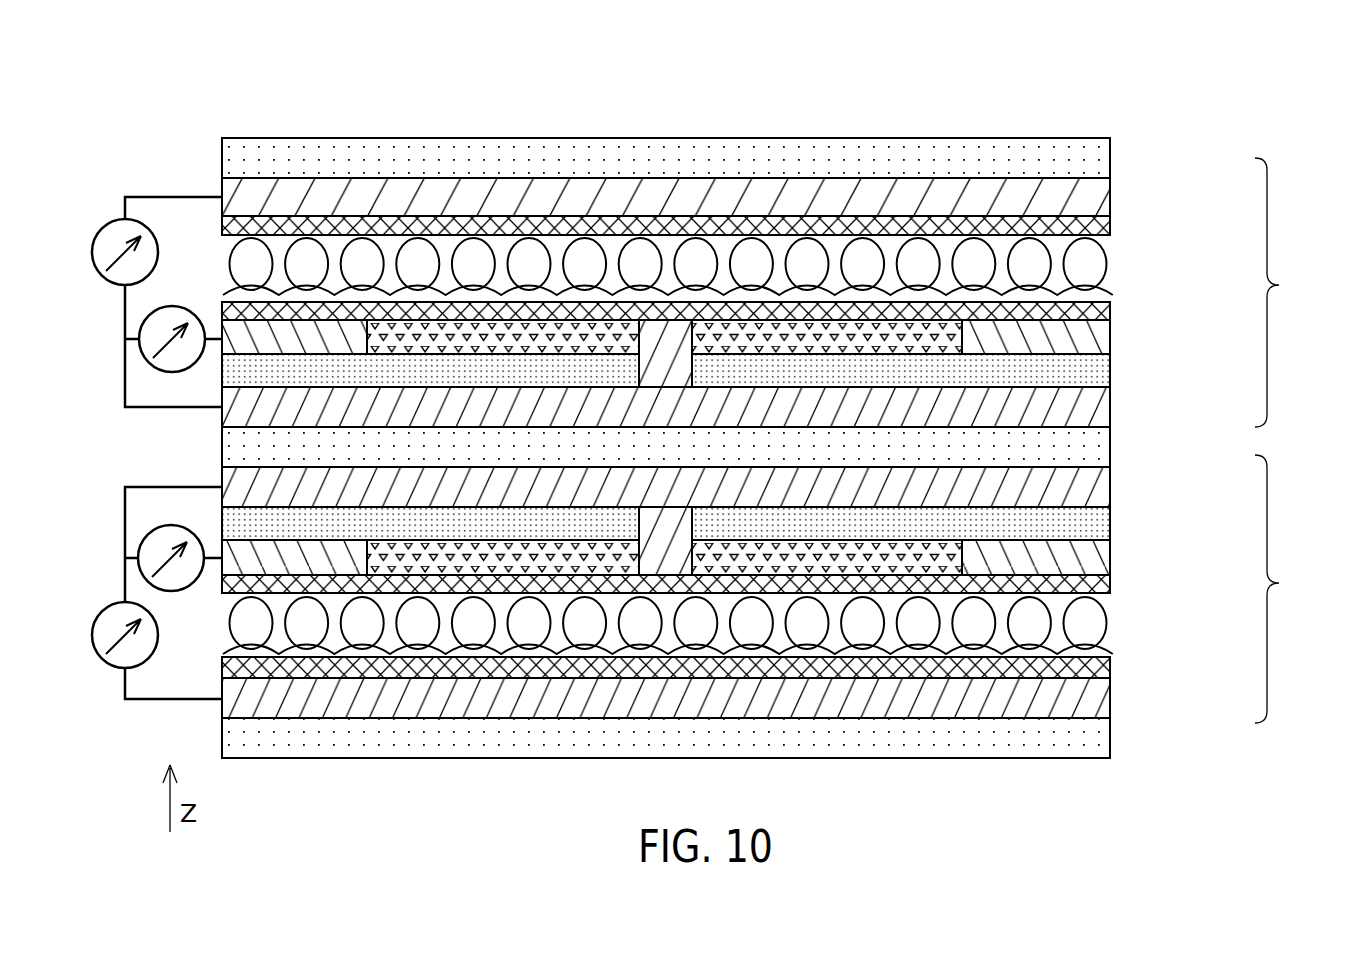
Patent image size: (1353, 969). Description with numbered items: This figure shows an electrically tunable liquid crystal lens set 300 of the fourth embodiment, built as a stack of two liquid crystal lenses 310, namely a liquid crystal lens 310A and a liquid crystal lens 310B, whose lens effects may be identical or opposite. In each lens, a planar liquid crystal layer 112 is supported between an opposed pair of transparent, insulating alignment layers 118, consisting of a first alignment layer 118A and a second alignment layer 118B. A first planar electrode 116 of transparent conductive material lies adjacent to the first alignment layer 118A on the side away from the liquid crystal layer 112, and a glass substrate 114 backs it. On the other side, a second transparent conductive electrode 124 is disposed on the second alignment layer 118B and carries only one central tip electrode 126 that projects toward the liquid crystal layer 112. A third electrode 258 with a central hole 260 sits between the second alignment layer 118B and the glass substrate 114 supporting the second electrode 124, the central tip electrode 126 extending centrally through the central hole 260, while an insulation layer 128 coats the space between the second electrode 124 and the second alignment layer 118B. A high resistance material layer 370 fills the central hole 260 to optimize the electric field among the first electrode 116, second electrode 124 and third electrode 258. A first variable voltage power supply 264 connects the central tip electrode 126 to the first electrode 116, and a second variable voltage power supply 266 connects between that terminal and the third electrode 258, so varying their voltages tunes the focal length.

The electrically tunable liquid crystal lens set 300 is at (1080, 112).
The liquid crystal lens 310 is at (1304, 440).
The liquid crystal lens 310A is at (1304, 589).
The liquid crystal lens 310B is at (1304, 292).
The glass substrate 114 is at (813, 160).
The first planar electrode 116 is at (1090, 203).
The alignment layers 118 is at (745, 447).
The first alignment layer 118A is at (1090, 228).
The second alignment layer 118B is at (1090, 314).
The planar liquid crystal layer 112 is at (1108, 266).
The third electrode 258 is at (1090, 346).
The high resistance material layer 370 is at (470, 335).
The central hole 260 is at (943, 332).
The insulation layer 128 is at (1090, 381).
The second transparent conductive electrode 124 is at (1090, 413).
The central tip electrode 126 is at (661, 355).
The first variable voltage power supply 264 is at (108, 222).
The second variable voltage power supply 266 is at (193, 306).